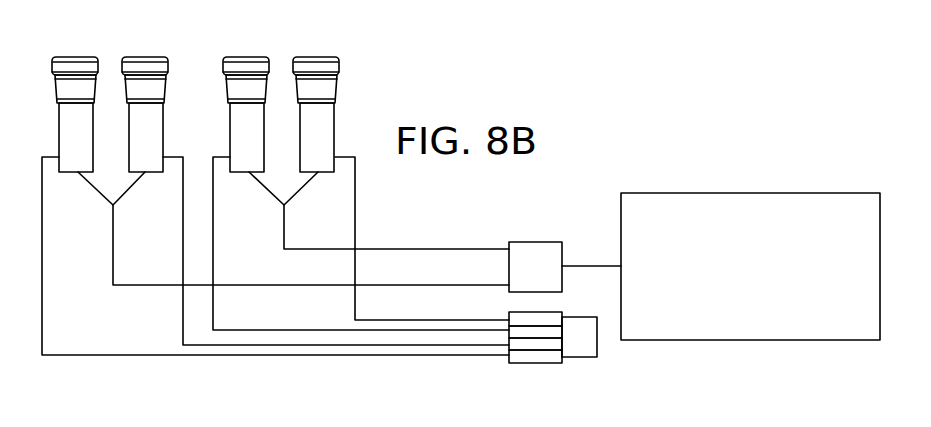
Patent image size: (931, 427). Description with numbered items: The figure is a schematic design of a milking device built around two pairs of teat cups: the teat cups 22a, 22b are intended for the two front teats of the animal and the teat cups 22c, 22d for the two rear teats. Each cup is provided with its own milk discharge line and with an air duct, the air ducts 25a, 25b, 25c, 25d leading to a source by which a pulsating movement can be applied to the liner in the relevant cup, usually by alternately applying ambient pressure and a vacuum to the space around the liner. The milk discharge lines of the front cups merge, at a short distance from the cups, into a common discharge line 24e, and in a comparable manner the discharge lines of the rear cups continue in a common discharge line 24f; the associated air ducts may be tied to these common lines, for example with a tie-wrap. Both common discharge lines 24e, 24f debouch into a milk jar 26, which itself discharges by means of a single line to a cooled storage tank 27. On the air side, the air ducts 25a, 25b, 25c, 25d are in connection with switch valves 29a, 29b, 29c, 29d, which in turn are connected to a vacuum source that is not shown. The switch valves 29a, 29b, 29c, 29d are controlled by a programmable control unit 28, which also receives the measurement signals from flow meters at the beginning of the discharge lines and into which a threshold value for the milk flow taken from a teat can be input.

The teat cup 22a is at (77, 87).
The teat cup 22b is at (145, 88).
The teat cup 22c is at (243, 90).
The teat cup 22d is at (311, 91).
The common discharge line 24e is at (235, 285).
The common discharge line 24f is at (372, 249).
The air duct 25a is at (43, 305).
The air duct 25b is at (183, 333).
The air duct 25c is at (213, 237).
The air duct 25d is at (355, 269).
The milk jar 26 is at (537, 253).
The cooled storage tank 27 is at (759, 211).
The programmable control unit 28 is at (579, 337).
The switch valve 29a is at (520, 358).
The switch valve 29b is at (542, 343).
The switch valve 29c is at (520, 332).
The switch valve 29d is at (538, 325).